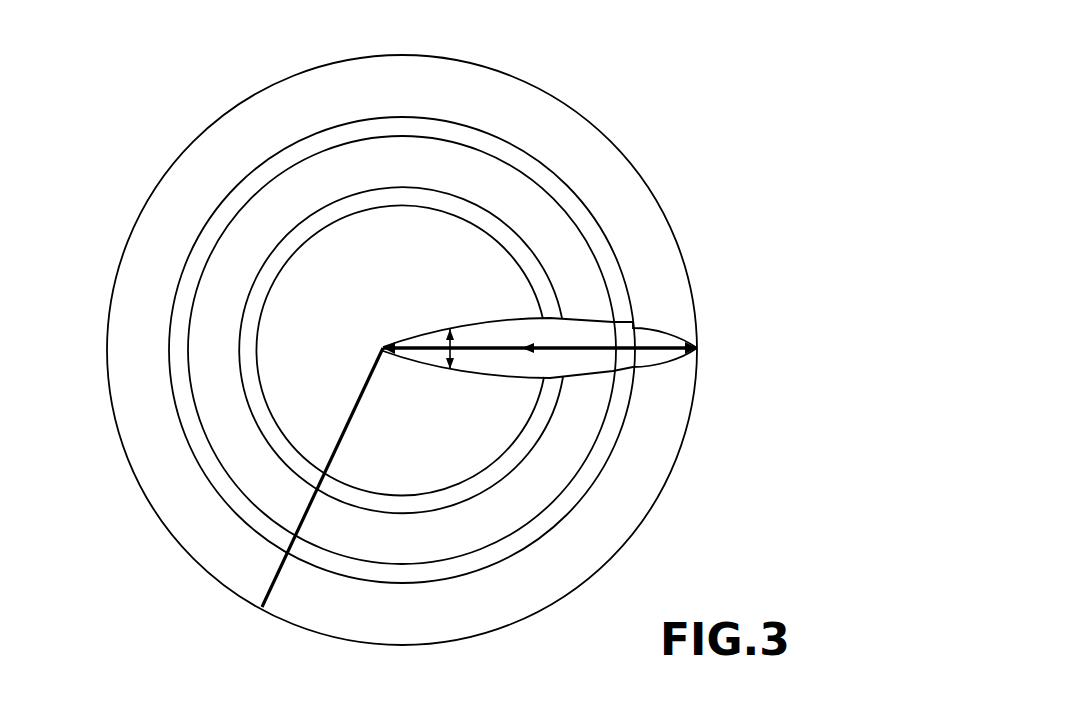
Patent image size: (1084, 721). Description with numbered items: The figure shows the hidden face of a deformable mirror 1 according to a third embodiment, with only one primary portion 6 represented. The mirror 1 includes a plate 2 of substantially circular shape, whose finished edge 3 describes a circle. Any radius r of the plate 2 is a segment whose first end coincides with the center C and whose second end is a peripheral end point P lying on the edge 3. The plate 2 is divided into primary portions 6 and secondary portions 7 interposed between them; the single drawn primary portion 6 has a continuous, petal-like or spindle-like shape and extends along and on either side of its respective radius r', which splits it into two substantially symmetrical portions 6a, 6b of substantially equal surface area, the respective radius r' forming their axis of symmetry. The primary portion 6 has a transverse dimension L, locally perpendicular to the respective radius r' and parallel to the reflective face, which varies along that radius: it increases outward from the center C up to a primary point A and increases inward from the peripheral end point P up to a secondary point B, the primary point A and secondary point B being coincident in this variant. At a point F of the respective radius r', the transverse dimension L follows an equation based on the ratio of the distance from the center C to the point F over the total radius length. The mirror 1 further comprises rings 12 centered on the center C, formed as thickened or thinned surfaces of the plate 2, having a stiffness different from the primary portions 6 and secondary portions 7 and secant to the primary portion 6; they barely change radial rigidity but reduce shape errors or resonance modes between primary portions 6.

The deformable mirror 1 is at (644, 78).
The plate 2 is at (177, 217).
The edge 3 is at (633, 170).
The primary portion 6 is at (489, 381).
The portion of the primary portion 6a is at (590, 365).
The portion of the primary portion 6b is at (590, 335).
The secondary portion 7 is at (540, 220).
The ring 12 is at (298, 142).
The primary point A is at (527, 347).
The secondary point B is at (527, 349).
The center C is at (530, 332).
The peripheral end point P is at (717, 351).
The point F is at (450, 337).
The transverse dimension L is at (450, 337).
The radius r is at (322, 516).
The respective radius r' is at (695, 408).